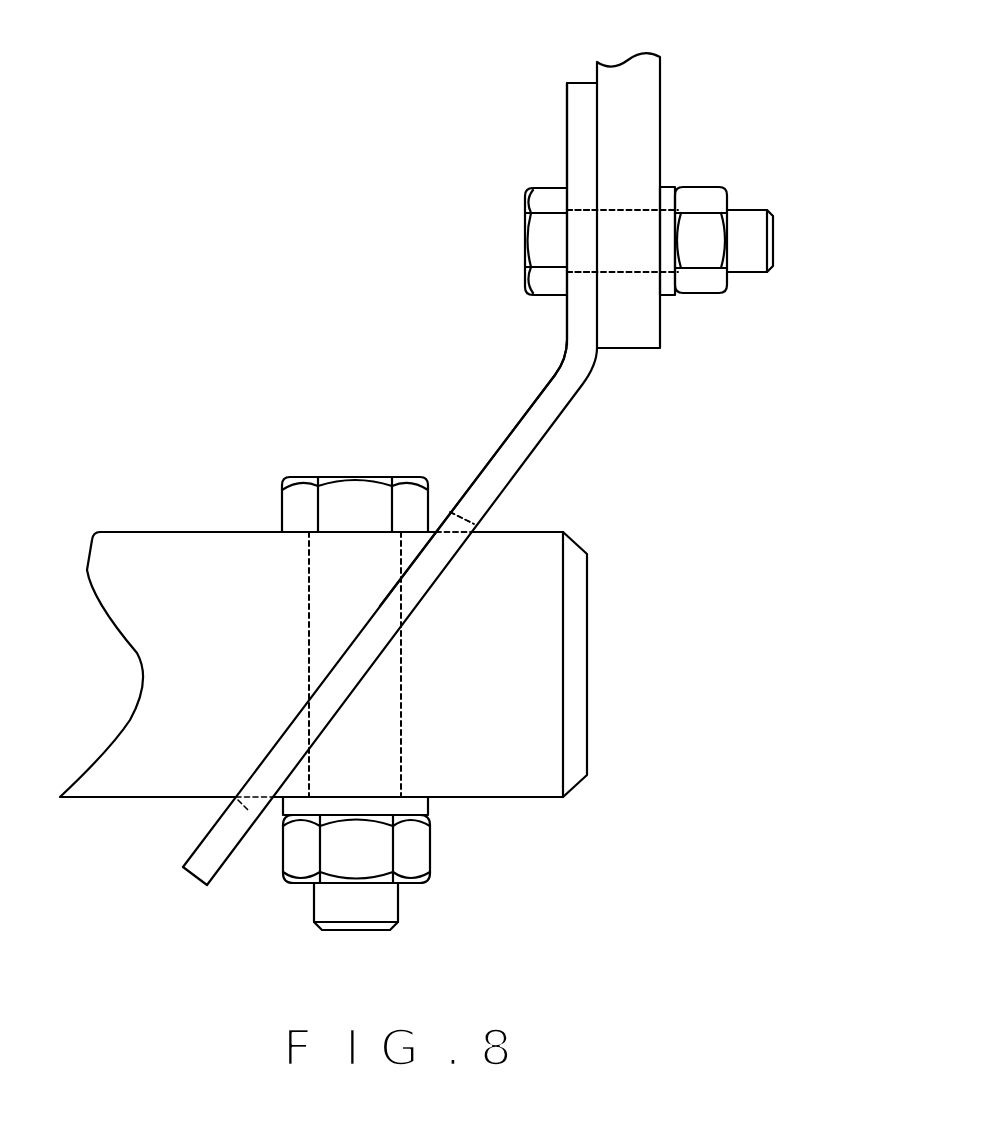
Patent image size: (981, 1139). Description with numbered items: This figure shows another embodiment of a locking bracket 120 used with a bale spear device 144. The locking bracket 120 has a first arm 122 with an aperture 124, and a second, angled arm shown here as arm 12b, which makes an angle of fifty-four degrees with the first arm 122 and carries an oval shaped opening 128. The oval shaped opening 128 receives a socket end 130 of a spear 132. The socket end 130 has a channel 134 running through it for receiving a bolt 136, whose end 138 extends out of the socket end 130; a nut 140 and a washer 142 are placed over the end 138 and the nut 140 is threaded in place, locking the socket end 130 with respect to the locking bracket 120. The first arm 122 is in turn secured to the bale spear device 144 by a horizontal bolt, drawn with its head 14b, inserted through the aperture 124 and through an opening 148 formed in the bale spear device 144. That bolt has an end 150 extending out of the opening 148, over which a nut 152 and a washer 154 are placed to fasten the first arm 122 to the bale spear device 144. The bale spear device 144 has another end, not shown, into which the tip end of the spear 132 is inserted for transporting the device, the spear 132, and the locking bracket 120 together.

The locking bracket 120 is at (566, 455).
The angled bracket arm 12b is at (530, 408).
The first arm 122 is at (567, 125).
The aperture 124 is at (589, 275).
The oval shaped opening 128 is at (450, 525).
The socket end 130 is at (588, 713).
The spear 132 is at (143, 565).
The channel 134 is at (307, 592).
The bolt 136 is at (320, 477).
The end 138 is at (400, 915).
The nut 140 is at (430, 860).
The washer 142 is at (430, 810).
The bale spear device 144 is at (672, 93).
The opening 148 is at (634, 208).
The end 150 is at (753, 272).
The nut 152 is at (708, 294).
The washer 154 is at (673, 187).
The bolt head 14b is at (548, 187).